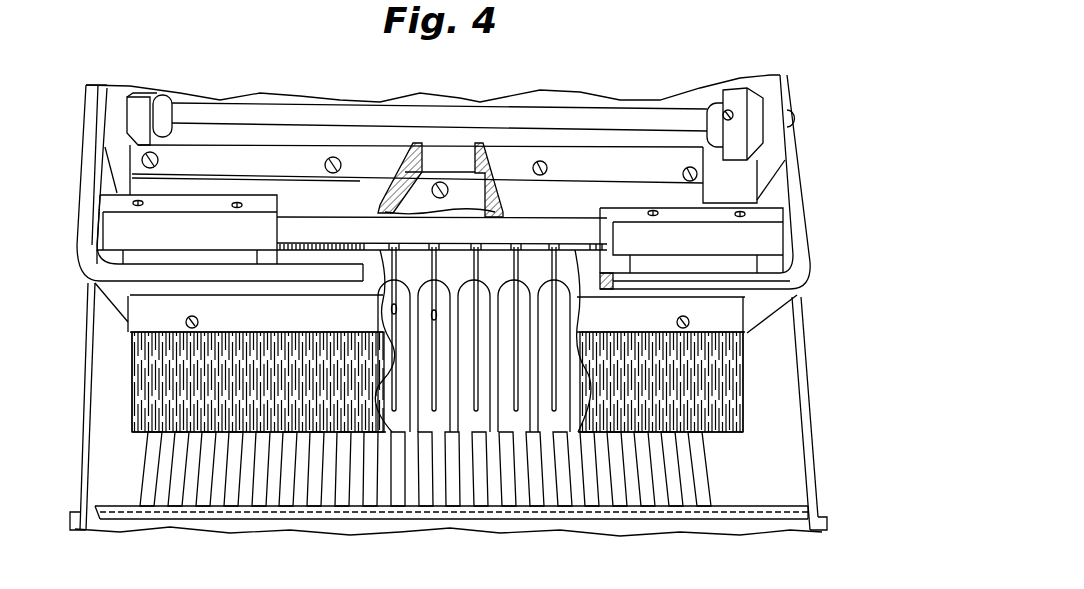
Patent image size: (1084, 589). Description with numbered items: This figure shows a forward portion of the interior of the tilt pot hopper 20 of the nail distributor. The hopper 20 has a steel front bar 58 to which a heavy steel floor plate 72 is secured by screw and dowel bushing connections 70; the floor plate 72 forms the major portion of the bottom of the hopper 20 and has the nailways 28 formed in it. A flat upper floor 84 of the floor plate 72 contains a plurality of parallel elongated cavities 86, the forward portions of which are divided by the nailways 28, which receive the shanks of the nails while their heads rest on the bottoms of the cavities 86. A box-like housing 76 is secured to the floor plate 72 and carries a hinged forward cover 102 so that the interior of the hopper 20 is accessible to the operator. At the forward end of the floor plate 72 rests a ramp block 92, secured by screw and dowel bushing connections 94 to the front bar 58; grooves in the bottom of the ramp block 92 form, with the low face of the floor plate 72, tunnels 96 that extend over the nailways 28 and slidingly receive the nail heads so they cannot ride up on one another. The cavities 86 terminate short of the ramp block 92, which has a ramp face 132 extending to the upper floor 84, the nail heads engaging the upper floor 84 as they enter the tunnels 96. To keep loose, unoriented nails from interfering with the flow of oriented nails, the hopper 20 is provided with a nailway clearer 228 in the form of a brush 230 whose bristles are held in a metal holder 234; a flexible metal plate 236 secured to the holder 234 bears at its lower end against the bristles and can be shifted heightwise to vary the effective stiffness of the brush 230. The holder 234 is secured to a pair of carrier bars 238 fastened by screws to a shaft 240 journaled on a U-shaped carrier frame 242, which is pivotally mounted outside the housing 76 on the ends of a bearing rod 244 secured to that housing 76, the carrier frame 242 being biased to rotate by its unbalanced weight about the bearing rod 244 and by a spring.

The tilt pot hopper 20 is at (272, 538).
The nailways 28 is at (431, 316).
The front bar 58 is at (443, 170).
The screw and dowel bushing connections 70 is at (452, 180).
The floor plate 72 is at (715, 473).
The box-like housing 76 is at (87, 362).
The upper floor 84 is at (406, 260).
The elongated cavities 86 is at (525, 500).
The ramp block 92 is at (177, 150).
The screw and dowel bushing connections 94 is at (548, 166).
The tunnels 96 is at (550, 246).
The forward cover 102 is at (609, 516).
The ramp face 132 is at (288, 190).
The nailway clearer 228 is at (128, 452).
The brush 230 is at (130, 367).
The holder 234 is at (254, 325).
The flexible metal plate 236 is at (730, 410).
The carrier bars 238 is at (208, 242).
The shaft 240 is at (302, 227).
The carrier frame 242 is at (77, 238).
The bearing rod 244 is at (298, 113).